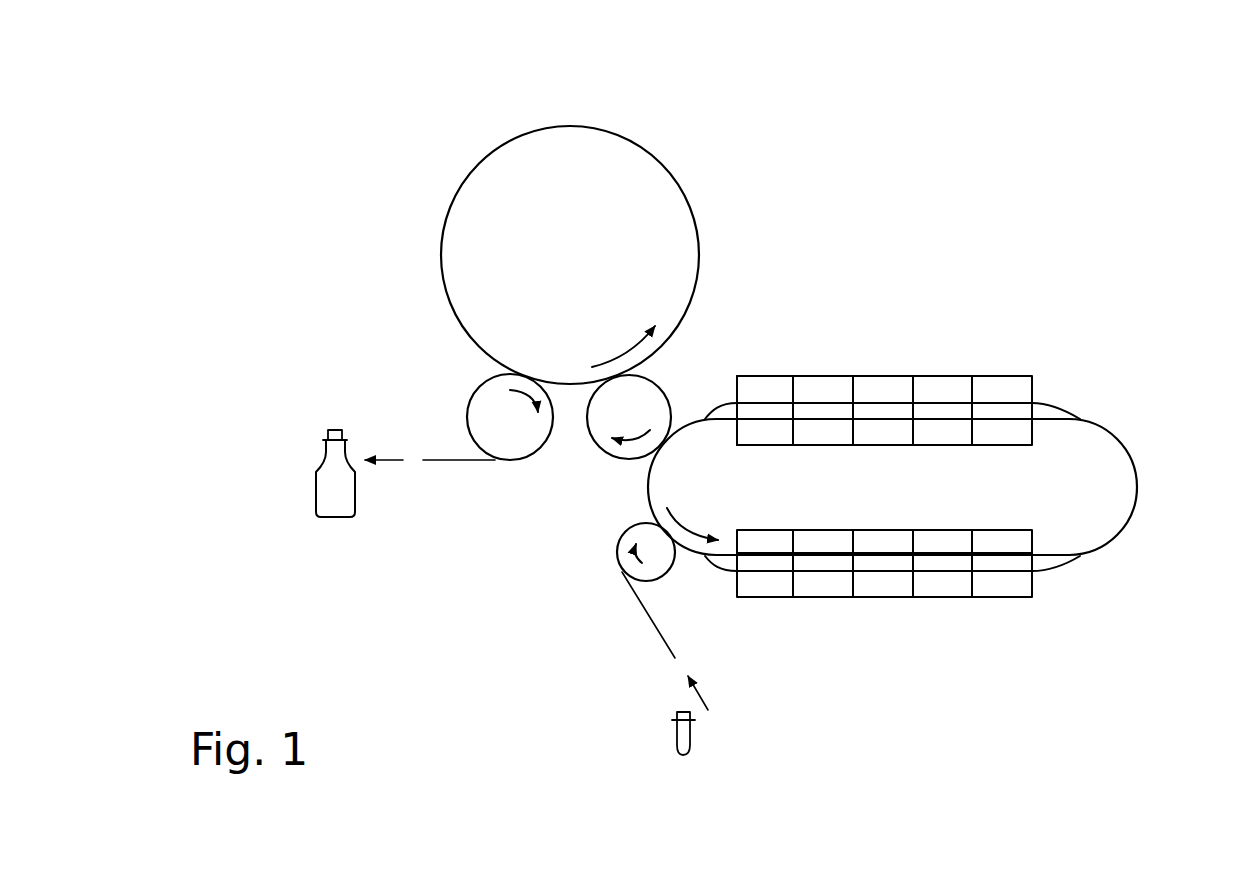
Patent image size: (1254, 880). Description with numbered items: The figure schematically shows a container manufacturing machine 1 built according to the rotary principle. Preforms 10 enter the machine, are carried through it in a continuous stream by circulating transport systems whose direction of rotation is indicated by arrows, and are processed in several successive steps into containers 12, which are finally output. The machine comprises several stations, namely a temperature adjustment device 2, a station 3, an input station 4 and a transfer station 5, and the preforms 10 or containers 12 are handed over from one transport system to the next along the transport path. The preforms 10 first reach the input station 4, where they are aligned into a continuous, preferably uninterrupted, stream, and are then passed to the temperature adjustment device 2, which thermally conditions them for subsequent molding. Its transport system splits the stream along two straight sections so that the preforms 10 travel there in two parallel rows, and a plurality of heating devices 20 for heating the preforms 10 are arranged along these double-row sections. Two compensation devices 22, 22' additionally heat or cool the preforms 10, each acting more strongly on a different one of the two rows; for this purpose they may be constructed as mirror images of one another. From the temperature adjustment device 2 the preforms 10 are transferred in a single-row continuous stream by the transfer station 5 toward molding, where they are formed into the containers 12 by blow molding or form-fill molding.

The container manufacturing machine 1 is at (422, 95).
The temperature adjustment device 2 is at (1102, 486).
The station 3 is at (485, 230).
The input station 4 is at (622, 567).
The transfer station 5 is at (485, 405).
The preform 10 is at (678, 737).
The container 12 is at (327, 485).
The heating device 20 is at (882, 385).
The compensation device 22 is at (790, 282).
The compensation device 22' is at (863, 300).